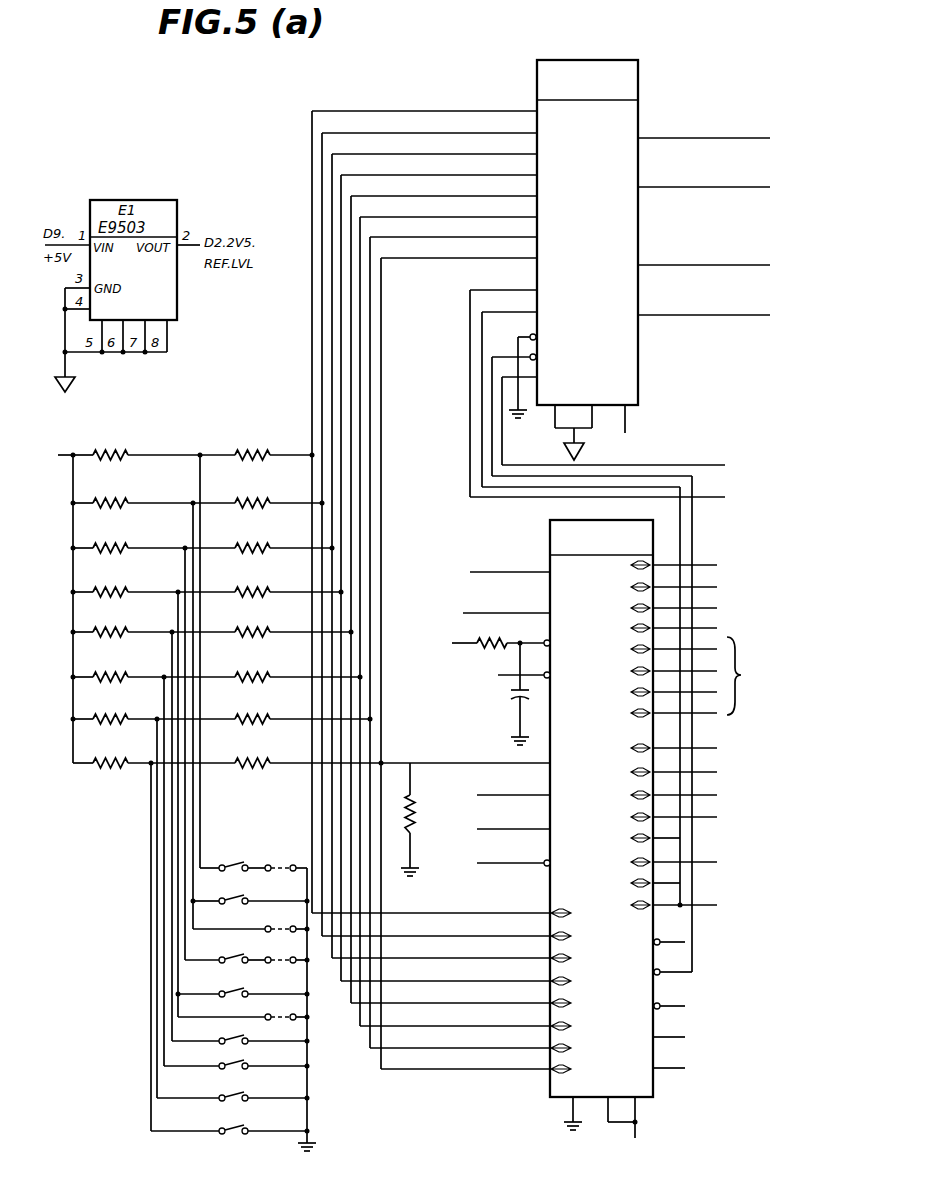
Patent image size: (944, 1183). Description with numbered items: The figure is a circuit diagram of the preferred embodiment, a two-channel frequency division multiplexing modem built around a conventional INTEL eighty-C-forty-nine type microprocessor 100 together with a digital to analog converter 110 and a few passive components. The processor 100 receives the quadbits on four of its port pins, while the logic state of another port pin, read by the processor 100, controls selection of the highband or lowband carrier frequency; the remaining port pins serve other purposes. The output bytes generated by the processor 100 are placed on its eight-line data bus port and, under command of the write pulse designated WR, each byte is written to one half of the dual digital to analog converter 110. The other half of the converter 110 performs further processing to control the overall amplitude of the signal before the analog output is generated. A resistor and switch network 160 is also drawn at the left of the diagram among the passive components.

The microprocessor 100 is at (550, 522).
The digital to analog converter 110 is at (636, 106).
The resistor network and switch bank 160 is at (132, 816).